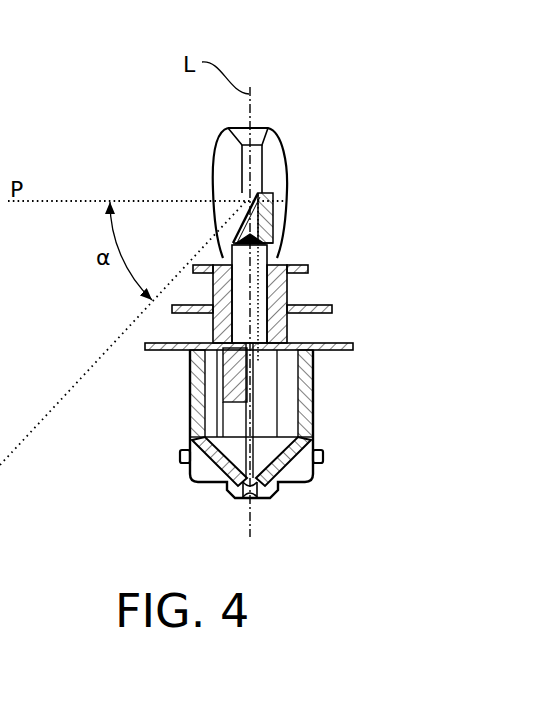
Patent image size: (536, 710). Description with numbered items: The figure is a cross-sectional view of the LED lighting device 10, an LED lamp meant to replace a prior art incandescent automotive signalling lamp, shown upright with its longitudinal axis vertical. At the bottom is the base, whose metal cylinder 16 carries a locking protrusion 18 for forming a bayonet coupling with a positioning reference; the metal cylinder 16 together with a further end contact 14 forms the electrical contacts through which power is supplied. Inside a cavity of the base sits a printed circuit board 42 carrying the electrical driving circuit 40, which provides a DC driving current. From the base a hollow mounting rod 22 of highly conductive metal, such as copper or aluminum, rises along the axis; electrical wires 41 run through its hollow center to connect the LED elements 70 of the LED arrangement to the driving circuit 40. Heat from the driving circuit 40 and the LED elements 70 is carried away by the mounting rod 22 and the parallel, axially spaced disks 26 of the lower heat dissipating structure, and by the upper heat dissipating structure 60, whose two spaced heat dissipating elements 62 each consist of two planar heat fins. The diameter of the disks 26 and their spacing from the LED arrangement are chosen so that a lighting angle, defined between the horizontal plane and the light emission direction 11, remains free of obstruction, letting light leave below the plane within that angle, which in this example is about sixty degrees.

The LED lighting device 10 is at (118, 160).
The light emission direction 11 is at (62, 417).
The end contact 14 is at (258, 497).
The metal cylinder 16 is at (192, 400).
The locking protrusion 18 is at (180, 457).
The mounting rod 22 is at (230, 294).
The disks 26 is at (193, 270).
The electrical driving circuit 40 is at (266, 410).
The electrical wires 41 is at (272, 228).
The printed circuit board 42 is at (255, 423).
The upper heat dissipating structure 60 is at (300, 154).
The heat dissipating elements 62 is at (261, 125).
The LED elements 70 is at (241, 199).